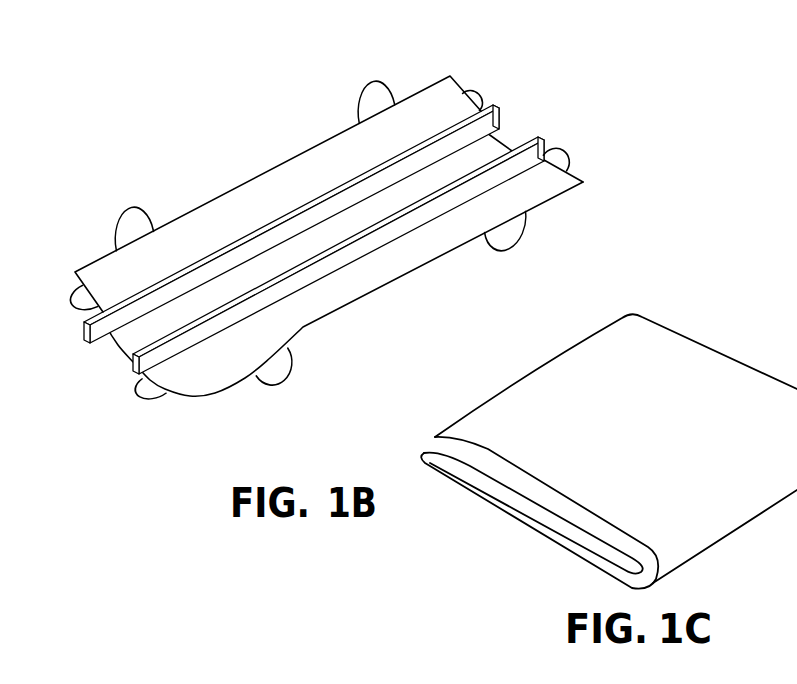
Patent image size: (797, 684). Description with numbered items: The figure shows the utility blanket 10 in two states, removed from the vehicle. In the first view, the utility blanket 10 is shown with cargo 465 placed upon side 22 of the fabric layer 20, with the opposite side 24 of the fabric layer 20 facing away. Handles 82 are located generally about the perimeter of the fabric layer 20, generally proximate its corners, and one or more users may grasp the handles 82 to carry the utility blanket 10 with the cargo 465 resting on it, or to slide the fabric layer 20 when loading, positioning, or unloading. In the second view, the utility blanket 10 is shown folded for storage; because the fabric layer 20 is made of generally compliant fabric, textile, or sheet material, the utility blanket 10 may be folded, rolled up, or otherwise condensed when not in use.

In FIG. 1B, the utility blanket 10 is at (267, 57).
In FIG. 1C, the utility blanket 10 is at (710, 296).
In FIG. 1B, the fabric layer 20 is at (214, 383).
In FIG. 1C, the fabric layer 20 is at (572, 372).
In FIG. 1B, the side 22 is at (357, 282).
In FIG. 1B, the side 24 is at (308, 328).
In FIG. 1B, the cargo 465 is at (538, 136).
In FIG. 1B, the handles 82 is at (131, 207).